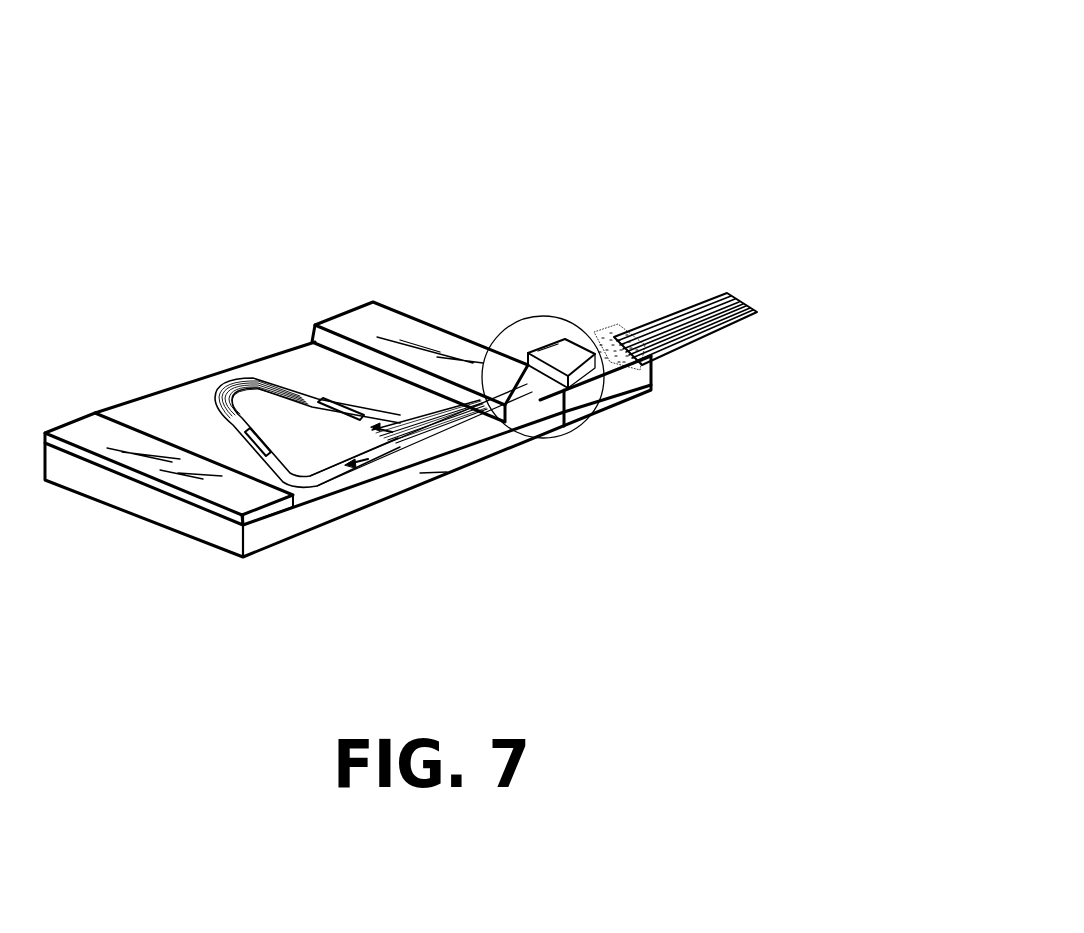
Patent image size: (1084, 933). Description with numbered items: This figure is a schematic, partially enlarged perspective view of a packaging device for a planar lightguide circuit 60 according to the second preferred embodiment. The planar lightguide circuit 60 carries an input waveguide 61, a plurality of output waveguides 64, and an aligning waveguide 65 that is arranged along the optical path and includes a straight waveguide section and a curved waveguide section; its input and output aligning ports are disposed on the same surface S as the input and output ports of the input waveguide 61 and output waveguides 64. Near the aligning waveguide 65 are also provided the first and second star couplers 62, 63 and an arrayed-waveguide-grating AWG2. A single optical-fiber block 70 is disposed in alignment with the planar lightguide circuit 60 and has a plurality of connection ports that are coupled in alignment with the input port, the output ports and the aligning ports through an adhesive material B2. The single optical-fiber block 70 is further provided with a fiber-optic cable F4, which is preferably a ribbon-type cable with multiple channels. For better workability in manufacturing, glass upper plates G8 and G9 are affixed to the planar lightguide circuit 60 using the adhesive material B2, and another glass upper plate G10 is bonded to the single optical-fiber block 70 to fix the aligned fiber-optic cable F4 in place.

The planar lightguide circuit 60 is at (246, 287).
The input waveguide 61 is at (403, 480).
The first star coupler 62 is at (250, 440).
The second star coupler 63 is at (340, 402).
The output waveguides 64 is at (478, 428).
The aligning waveguide 65 is at (372, 462).
The glass upper plate G8 is at (90, 436).
The glass upper plate G9 is at (362, 320).
The glass upper plate G10 is at (527, 347).
The adhesive material B2 is at (617, 335).
The fiber-optic cable F4 is at (736, 322).
The spacing S is at (458, 472).
The arrayed-waveguide-grating AWG2 is at (220, 387).
The single optical-fiber block 70 is at (637, 377).